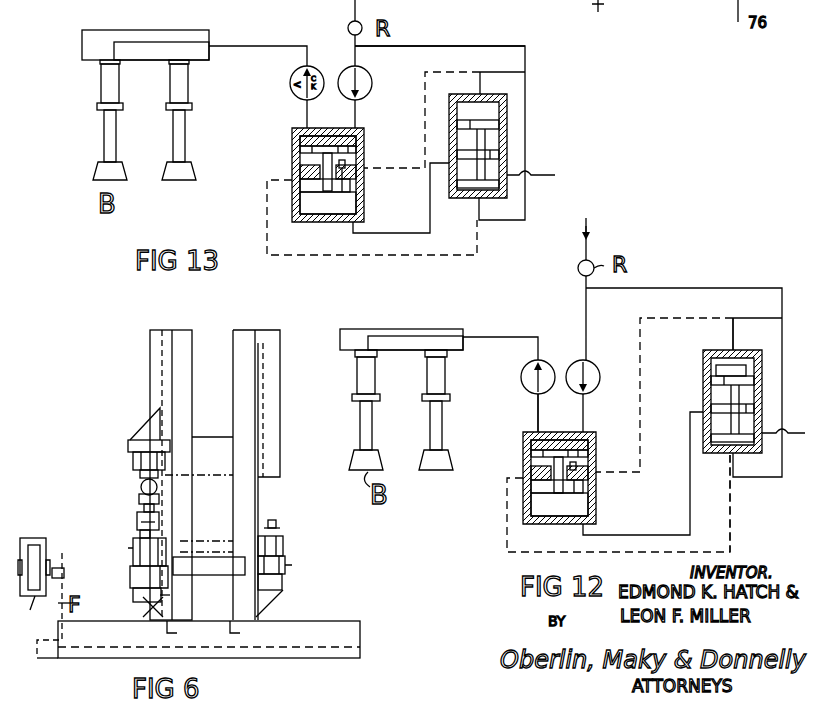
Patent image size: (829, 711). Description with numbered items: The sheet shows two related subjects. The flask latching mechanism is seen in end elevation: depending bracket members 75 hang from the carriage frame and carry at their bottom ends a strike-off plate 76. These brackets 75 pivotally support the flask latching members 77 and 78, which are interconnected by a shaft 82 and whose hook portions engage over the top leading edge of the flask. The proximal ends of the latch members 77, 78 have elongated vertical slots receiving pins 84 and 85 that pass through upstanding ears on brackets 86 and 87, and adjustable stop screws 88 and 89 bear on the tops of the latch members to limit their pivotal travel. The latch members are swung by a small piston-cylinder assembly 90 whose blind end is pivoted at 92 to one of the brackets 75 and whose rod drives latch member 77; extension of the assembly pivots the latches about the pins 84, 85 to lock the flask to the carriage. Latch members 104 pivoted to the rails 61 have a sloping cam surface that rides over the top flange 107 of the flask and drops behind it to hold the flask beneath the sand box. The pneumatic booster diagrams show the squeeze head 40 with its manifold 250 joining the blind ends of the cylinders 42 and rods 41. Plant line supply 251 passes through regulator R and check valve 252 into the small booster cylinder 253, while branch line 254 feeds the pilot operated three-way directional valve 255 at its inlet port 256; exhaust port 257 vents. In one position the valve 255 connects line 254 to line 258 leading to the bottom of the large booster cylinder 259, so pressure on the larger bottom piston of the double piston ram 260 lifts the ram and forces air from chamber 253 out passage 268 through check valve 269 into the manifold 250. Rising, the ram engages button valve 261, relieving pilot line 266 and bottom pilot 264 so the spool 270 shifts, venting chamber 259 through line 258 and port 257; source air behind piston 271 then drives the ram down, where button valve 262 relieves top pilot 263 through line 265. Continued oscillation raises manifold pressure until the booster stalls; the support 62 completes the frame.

In FIG. 13, the universal multiple piston squeeze head 40 is at (109, 28).
In FIG. 12, the universal multiple piston squeeze head 40 is at (399, 326).
In FIG. 13, the piston rod 41 is at (104, 144).
In FIG. 12, the piston rod 41 is at (440, 421).
In FIG. 13, the downwardly extending cylinders 42 is at (102, 83).
In FIG. 12, the downwardly extending cylinders 42 is at (437, 386).
In FIG. 13, the manifold 250 is at (158, 44).
In FIG. 12, the manifold 250 is at (428, 336).
In FIG. 13, the plant line pressure supply 251 is at (362, 26).
In FIG. 12, the plant line pressure supply 251 is at (594, 232).
In FIG. 13, the check valve 252 is at (373, 79).
In FIG. 12, the check valve 252 is at (592, 368).
In FIG. 13, the small booster cylinder 253 is at (300, 160).
In FIG. 12, the small booster cylinder 253 is at (562, 442).
In FIG. 13, the branch line 254 is at (499, 46).
In FIG. 12, the branch line 254 is at (706, 288).
In FIG. 13, the pilot operated three-way directional valve 255 is at (505, 118).
In FIG. 12, the pilot operated three-way directional valve 255 is at (760, 370).
In FIG. 13, the inlet port 256 is at (498, 136).
In FIG. 12, the inlet port 256 is at (754, 399).
In FIG. 13, the exhaust port 257 is at (554, 176).
In FIG. 12, the exhaust port 257 is at (800, 446).
In FIG. 13, the line 258 is at (384, 233).
In FIG. 12, the line 258 is at (632, 535).
In FIG. 13, the large booster cylinder 259 is at (320, 210).
In FIG. 12, the large booster cylinder 259 is at (586, 496).
In FIG. 13, the double piston ram 260 is at (300, 187).
In FIG. 12, the double piston ram 260 is at (539, 515).
In FIG. 13, the button valve 261 is at (298, 176).
In FIG. 12, the button valve 261 is at (536, 462).
In FIG. 13, the button valve 262 is at (358, 166).
In FIG. 12, the button valve 262 is at (596, 469).
In FIG. 12, the top pilot 263 is at (731, 340).
In FIG. 12, the bottom pilot 264 is at (730, 465).
In FIG. 12, the line 265 is at (642, 410).
In FIG. 12, the pilot line 266 is at (732, 532).
In FIG. 12, the passage 268 is at (530, 409).
In FIG. 12, the check valve 269 is at (521, 372).
In FIG. 12, the spool 270 is at (722, 384).
In FIG. 13, the piston 271 is at (333, 141).
In FIG. 6, the rails 61 is at (37, 637).
In FIG. 6, the support 62 is at (34, 598).
In FIG. 6, the depending bracket members 75 is at (258, 510).
In FIG. 6, the strike-off plate 76 is at (360, 646).
In FIG. 6, the flask latching member 77 is at (132, 550).
In FIG. 6, the flask latching member 78 is at (284, 549).
In FIG. 6, the shaft 82 is at (205, 557).
In FIG. 6, the pin 84 is at (132, 574).
In FIG. 6, the pin 85 is at (291, 566).
In FIG. 6, the bracket 86 is at (134, 598).
In FIG. 6, the bracket 87 is at (283, 590).
In FIG. 6, the adjustable stop screw 88 is at (136, 522).
In FIG. 6, the adjustable stop screw 89 is at (278, 528).
In FIG. 6, the piston-cylinder assembly 90 is at (140, 488).
In FIG. 6, the pivot 92 is at (132, 463).
In FIG. 6, the latch member 104 is at (35, 538).
In FIG. 6, the top flange 107 is at (62, 572).